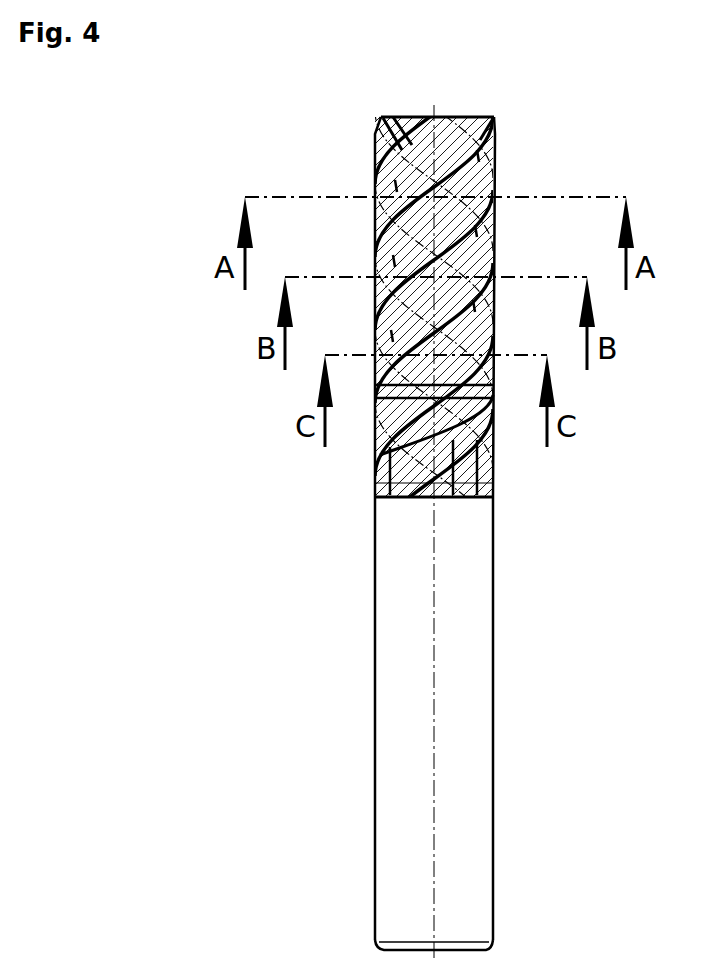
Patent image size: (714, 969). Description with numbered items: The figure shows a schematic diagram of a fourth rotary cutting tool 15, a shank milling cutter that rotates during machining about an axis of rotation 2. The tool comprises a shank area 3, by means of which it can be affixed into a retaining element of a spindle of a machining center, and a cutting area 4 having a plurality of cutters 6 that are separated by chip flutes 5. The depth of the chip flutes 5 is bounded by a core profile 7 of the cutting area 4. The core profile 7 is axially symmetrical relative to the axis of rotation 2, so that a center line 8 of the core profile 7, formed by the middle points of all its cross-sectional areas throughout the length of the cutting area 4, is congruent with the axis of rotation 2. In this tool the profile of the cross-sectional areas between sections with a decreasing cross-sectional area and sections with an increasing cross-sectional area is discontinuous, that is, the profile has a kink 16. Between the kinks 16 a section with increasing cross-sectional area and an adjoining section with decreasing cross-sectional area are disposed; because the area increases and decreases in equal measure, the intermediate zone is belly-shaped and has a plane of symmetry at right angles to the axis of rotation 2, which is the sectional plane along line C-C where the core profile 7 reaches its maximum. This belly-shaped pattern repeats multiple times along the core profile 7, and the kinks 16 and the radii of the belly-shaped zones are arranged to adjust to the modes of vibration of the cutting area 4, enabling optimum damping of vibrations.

The axis of rotation 2 is at (434, 676).
The shank area 3 is at (334, 777).
The cutting area 4 is at (336, 139).
The chip flutes 5 is at (490, 119).
The cutters 6 is at (379, 130).
The core profile 7 is at (387, 470).
The center line 8 is at (436, 434).
The fourth rotary cutting tool 15 is at (139, 588).
The kink 16 is at (463, 300).